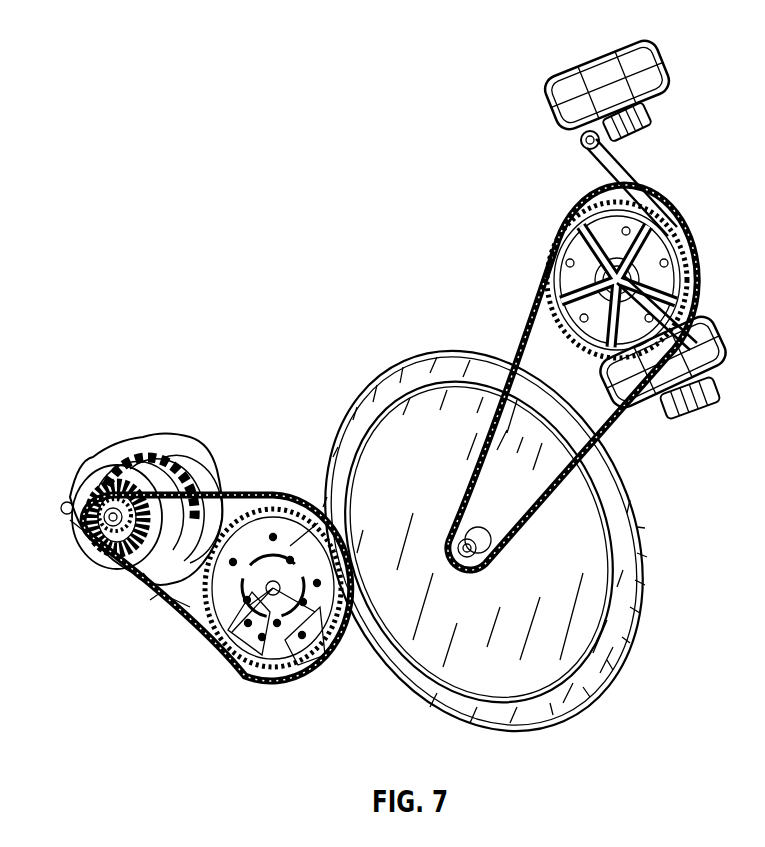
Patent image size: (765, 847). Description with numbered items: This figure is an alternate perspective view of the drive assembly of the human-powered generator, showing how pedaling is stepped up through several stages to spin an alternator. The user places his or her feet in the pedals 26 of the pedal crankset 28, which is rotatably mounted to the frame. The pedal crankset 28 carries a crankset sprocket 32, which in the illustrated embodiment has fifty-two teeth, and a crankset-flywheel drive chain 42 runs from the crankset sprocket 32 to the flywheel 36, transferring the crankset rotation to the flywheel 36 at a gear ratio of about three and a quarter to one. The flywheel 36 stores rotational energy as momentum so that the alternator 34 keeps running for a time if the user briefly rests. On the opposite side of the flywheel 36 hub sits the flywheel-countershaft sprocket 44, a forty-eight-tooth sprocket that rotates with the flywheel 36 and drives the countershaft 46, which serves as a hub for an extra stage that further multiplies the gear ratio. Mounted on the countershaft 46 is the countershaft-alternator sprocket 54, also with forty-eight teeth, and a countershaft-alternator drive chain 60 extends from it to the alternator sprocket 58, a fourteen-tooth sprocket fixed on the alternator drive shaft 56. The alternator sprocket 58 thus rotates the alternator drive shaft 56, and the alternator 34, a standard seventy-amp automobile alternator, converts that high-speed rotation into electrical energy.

The pedals 26 is at (655, 48).
The pedal crankset 28 is at (600, 160).
The crankset sprocket 32 is at (575, 292).
The alternator 34 is at (135, 437).
The flywheel 36 is at (655, 580).
The crankset-flywheel drive chain 42 is at (548, 252).
The flywheel-countershaft sprocket 44 is at (359, 622).
The countershaft 46 is at (228, 642).
The countershaft-alternator sprocket 54 is at (252, 525).
The alternator drive shaft 56 is at (95, 527).
The alternator sprocket 58 is at (95, 555).
The countershaft-alternator drive chain 60 is at (190, 612).